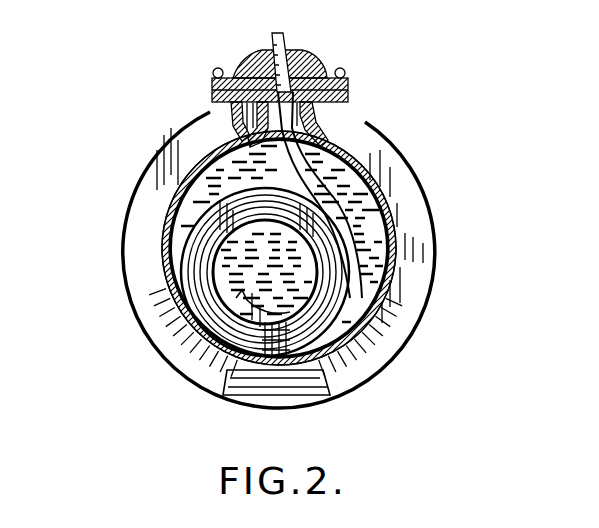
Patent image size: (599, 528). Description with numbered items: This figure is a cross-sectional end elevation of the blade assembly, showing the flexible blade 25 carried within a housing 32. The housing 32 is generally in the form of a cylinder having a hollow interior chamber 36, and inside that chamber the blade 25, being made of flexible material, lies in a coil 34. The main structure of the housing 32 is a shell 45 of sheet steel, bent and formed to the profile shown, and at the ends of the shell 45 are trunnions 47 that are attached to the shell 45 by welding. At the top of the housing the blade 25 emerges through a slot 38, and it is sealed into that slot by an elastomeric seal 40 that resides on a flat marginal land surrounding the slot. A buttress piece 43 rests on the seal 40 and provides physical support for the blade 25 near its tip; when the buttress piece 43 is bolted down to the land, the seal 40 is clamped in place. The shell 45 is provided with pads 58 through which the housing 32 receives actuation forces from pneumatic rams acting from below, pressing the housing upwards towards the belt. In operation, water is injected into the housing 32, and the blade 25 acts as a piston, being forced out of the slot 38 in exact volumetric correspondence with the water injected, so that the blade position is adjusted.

The blade 25 is at (282, 42).
The buttress piece 43 is at (256, 57).
The elastomeric seal 40 is at (347, 80).
The slot 38 is at (374, 131).
The hollow interior chamber 36 is at (183, 173).
The shell 45 is at (381, 190).
The coil 34 is at (350, 254).
The housing 32 is at (156, 274).
The trunnions 47 is at (400, 327).
The pads 58 is at (323, 411).